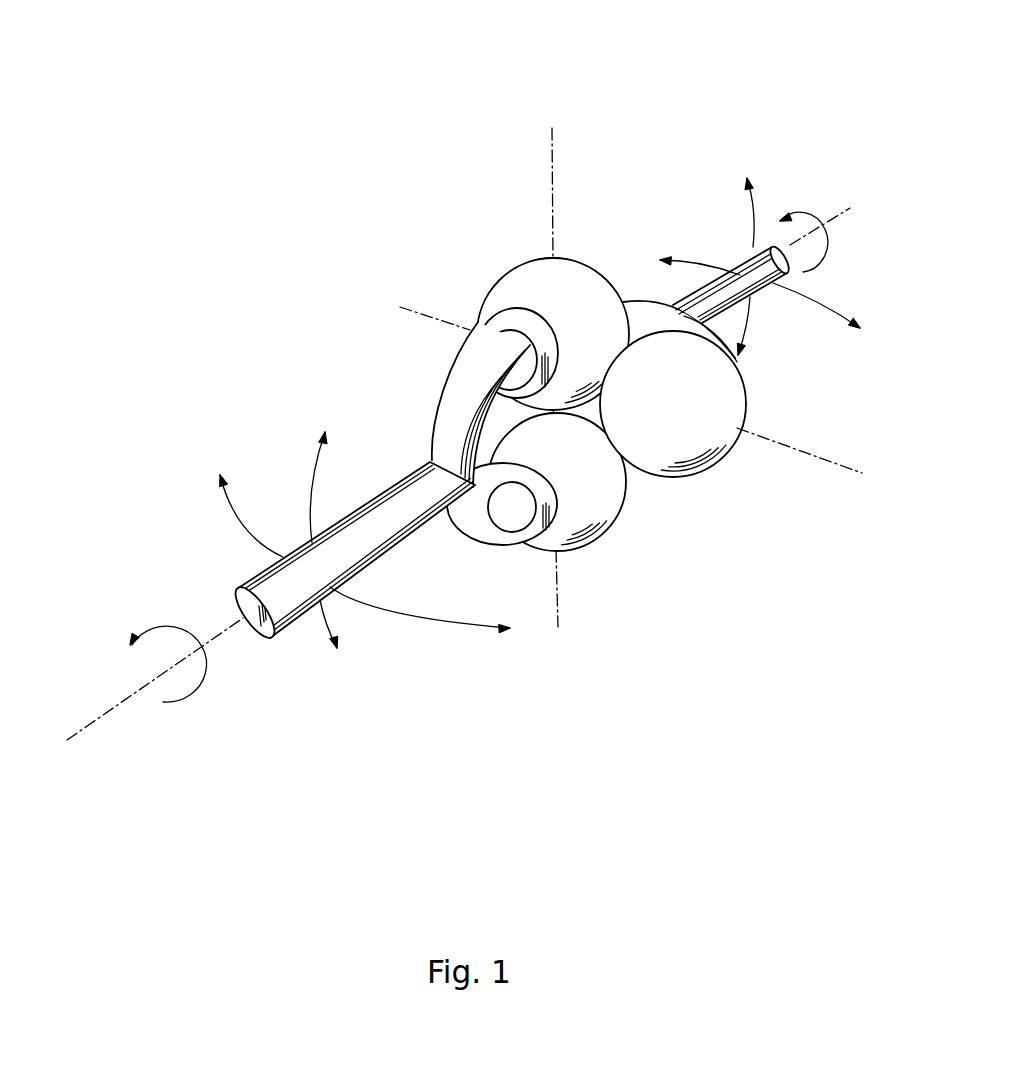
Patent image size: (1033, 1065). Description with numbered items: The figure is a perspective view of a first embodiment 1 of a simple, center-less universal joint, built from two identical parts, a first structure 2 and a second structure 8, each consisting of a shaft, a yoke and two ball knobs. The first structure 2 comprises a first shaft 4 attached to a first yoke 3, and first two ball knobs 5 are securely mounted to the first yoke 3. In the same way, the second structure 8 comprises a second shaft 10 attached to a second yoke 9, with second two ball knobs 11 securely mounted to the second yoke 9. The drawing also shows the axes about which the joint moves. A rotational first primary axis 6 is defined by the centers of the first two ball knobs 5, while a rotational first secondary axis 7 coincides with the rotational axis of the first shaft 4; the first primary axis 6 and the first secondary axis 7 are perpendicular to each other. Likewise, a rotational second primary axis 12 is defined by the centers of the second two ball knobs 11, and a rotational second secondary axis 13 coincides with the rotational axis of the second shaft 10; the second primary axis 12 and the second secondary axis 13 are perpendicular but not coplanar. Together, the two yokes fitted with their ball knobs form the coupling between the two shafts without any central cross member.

The first embodiment 1 is at (798, 828).
The first structure 2 is at (170, 273).
The first yoke 3 is at (455, 429).
The first shaft 4 is at (360, 552).
The first two ball knobs 5 is at (566, 333).
The rotational first primary axis 6 is at (558, 608).
The rotational first secondary axis 7 is at (80, 730).
The second structure 8 is at (667, 83).
The second yoke 9 is at (638, 338).
The second shaft 10 is at (719, 307).
The second two ball knobs 11 is at (666, 422).
The rotational second primary axis 12 is at (843, 467).
The rotational second secondary axis 13 is at (840, 210).